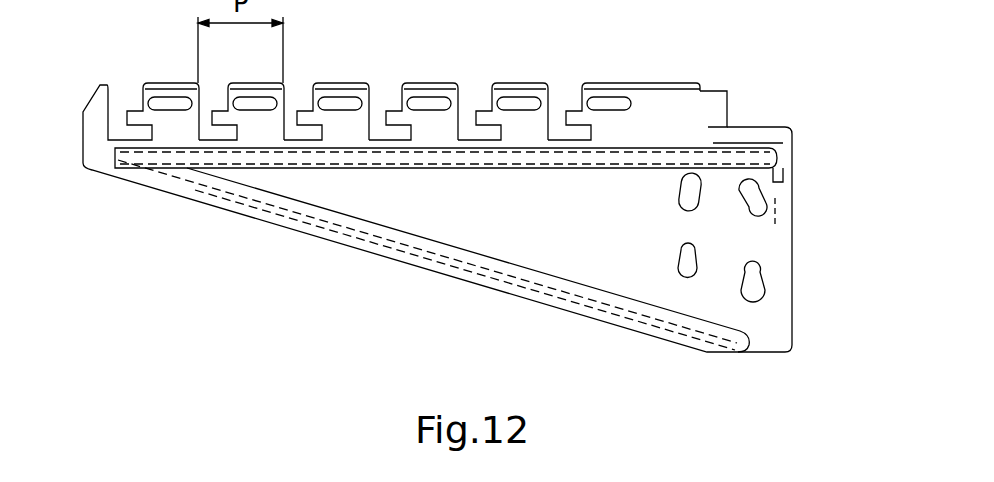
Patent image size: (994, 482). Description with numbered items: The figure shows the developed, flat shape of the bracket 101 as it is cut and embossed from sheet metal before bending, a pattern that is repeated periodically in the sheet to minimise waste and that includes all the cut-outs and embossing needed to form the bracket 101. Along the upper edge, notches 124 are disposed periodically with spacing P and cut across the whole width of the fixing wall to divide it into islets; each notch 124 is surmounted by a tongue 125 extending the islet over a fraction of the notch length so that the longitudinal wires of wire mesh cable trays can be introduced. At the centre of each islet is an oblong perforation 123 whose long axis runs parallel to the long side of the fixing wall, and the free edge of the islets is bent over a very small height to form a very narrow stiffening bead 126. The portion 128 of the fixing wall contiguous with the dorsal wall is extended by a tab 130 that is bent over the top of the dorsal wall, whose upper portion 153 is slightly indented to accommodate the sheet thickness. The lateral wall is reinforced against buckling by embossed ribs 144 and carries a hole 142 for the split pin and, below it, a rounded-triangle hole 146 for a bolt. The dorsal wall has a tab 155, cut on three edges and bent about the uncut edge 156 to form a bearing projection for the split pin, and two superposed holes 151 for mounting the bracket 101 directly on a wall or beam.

The bracket 101 is at (275, 245).
The oblong perforation 123 is at (522, 100).
The notch 124 is at (128, 102).
The tongue 125 is at (213, 115).
The bead 126 is at (338, 87).
The portion of fixing wall 128 is at (638, 105).
The tab 130 is at (722, 115).
The hole 142 is at (693, 188).
The embossed rib 144 is at (453, 163).
The hole 146 is at (687, 263).
The superposed hole 151 is at (755, 283).
The upper portion of dorsal wall 153 is at (770, 140).
The tab 155 is at (752, 213).
The uncut edge 156 is at (767, 190).